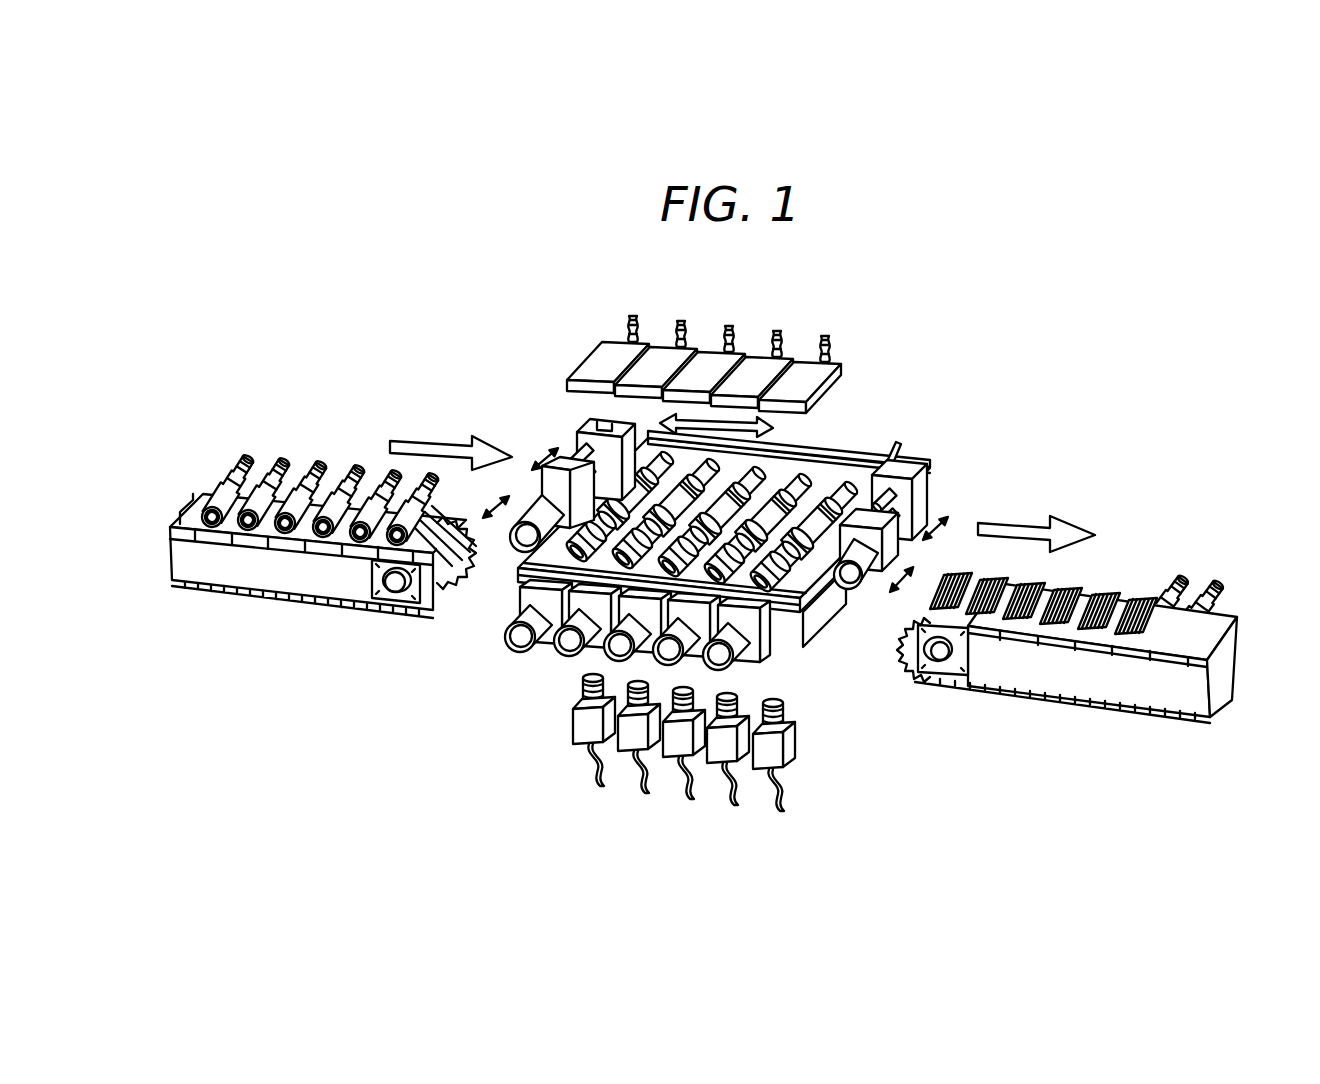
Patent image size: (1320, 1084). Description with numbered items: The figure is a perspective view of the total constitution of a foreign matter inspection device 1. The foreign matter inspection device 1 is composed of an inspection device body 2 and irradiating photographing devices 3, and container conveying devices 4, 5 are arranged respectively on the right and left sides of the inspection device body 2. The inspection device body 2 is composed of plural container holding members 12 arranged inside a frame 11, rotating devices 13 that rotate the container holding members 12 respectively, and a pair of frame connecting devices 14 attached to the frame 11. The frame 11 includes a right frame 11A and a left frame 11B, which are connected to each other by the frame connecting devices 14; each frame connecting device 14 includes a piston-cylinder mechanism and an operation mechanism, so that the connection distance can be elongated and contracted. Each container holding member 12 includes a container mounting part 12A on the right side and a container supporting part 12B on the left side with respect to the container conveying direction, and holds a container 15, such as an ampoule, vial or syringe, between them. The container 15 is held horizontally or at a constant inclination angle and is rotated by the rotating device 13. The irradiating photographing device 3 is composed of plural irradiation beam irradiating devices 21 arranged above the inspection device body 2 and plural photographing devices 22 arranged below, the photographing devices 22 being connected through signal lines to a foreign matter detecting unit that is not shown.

The foreign matter inspection device 1 is at (1038, 307).
The inspection device body 2 is at (858, 462).
The irradiating photographing device 3 is at (801, 738).
The container conveying device 4 is at (340, 488).
The container conveying device 5 is at (1097, 588).
The frame 11 is at (838, 605).
The right frame 11A is at (821, 650).
The left frame 11B is at (833, 452).
The container holding member 12 is at (790, 484).
The container mounting part 12A is at (660, 617).
The container supporting part 12B is at (897, 458).
The rotating device 13 is at (735, 660).
The frame connecting device 14 is at (512, 553).
The container 15 is at (324, 472).
The irradiation beam irradiating device 21 is at (836, 373).
The photographing device 22 is at (789, 752).